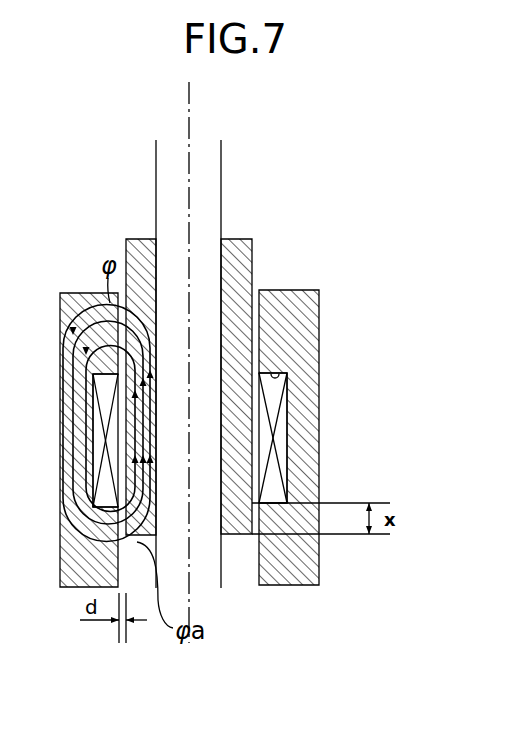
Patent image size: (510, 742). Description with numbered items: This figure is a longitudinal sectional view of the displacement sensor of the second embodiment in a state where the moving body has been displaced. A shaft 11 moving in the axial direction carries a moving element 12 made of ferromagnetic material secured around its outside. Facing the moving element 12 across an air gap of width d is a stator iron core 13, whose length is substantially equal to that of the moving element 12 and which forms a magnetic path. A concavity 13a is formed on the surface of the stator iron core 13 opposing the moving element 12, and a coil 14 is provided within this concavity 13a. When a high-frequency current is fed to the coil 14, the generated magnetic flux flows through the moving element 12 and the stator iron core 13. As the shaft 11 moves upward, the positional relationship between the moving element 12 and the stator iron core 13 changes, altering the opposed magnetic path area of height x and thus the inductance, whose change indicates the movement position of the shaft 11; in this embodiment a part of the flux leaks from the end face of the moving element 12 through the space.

The shaft 11 is at (213, 168).
The moving element 12 is at (238, 246).
The stator iron core 13 is at (289, 296).
The concavity 13a is at (275, 378).
The coil 14 is at (282, 432).